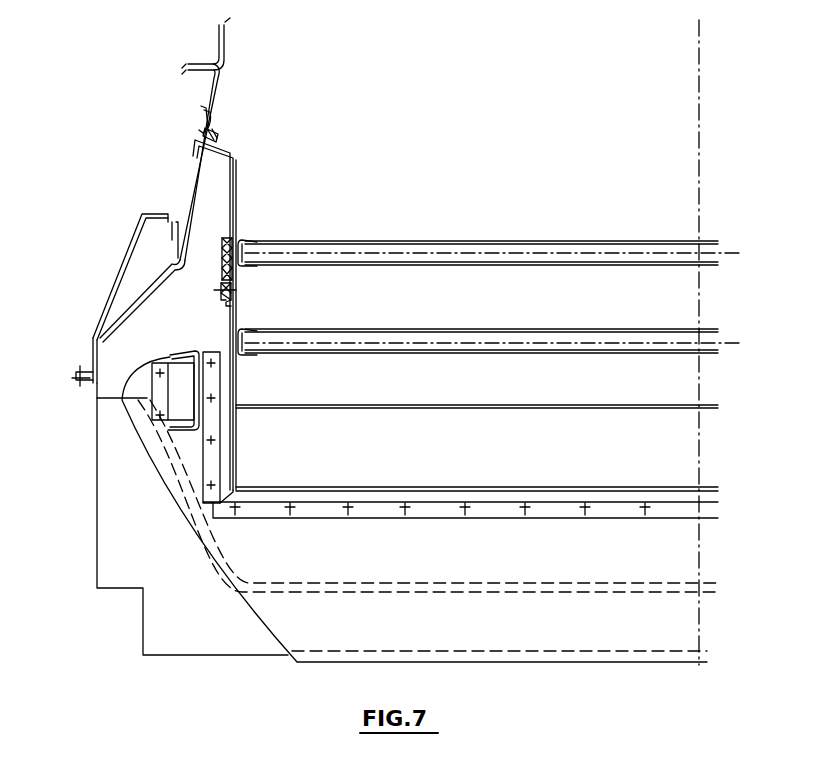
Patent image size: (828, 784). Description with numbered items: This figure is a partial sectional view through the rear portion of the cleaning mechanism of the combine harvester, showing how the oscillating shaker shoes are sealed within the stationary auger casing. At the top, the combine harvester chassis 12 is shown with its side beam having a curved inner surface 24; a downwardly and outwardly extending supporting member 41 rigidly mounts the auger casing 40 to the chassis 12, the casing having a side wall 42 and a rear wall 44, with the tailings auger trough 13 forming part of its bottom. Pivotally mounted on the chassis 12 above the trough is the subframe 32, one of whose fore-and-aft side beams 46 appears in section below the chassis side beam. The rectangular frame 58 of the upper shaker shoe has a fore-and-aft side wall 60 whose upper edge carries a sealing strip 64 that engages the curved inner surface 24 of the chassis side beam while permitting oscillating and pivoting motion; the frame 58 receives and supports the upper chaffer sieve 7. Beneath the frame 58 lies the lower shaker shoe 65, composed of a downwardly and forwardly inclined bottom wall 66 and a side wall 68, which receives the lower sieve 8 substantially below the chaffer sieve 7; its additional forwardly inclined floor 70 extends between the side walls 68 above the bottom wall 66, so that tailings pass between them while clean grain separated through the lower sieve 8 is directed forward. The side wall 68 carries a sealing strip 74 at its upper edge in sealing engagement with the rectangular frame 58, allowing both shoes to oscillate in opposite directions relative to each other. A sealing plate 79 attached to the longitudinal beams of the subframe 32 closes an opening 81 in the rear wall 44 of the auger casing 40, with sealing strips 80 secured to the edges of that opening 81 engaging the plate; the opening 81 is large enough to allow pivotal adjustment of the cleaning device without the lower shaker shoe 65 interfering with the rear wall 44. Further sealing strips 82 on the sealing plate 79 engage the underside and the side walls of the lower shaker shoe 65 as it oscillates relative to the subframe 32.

The upper chaffer sieve 7 is at (508, 270).
The lower sieve 8 is at (509, 355).
The combine harvester chassis 12 is at (184, 180).
The tailings auger trough 13 is at (246, 657).
The curved inner surfaces 24 is at (186, 190).
The subframe 32 is at (182, 350).
The auger casing 40 is at (188, 665).
The supporting members 41 is at (120, 286).
The side walls 42 is at (97, 512).
The rear wall 44 is at (158, 573).
The side beams 46 is at (190, 430).
The rectangular frame 58 is at (237, 218).
The side walls 60 is at (236, 197).
The sealing strips 64 is at (208, 124).
The lower shaker shoe 65 is at (610, 489).
The bottom wall 66 is at (498, 490).
The side walls 68 is at (235, 456).
The additional floor 70 is at (520, 410).
The sealing strips 74 is at (222, 268).
The sealing plate 79 is at (246, 620).
The sealing strips 80 is at (565, 583).
The opening 81 is at (603, 592).
The sealing strips 82 is at (225, 396).